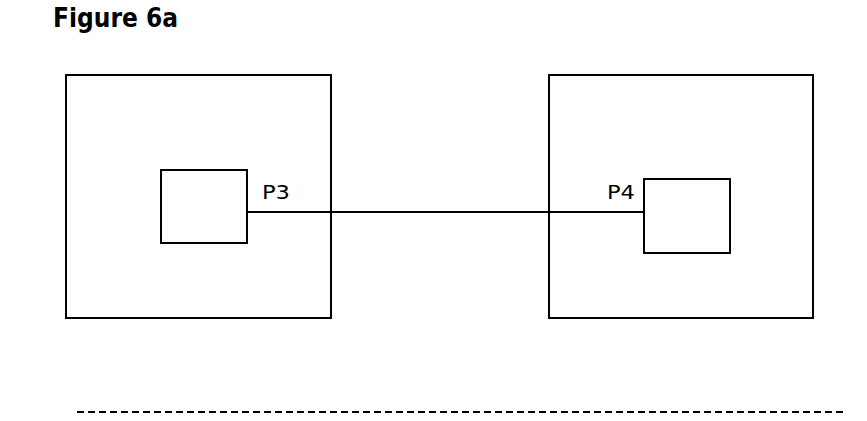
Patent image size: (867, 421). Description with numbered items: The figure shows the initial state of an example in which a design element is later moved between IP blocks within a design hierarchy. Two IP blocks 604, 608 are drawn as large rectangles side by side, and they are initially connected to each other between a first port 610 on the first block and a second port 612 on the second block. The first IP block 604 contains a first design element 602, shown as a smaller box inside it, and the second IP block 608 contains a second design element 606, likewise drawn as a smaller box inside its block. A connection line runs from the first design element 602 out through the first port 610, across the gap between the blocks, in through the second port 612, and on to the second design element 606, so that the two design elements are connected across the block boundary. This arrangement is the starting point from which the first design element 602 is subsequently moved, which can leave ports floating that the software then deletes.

The element IP_1 602 is at (172, 254).
The IP block 604 is at (225, 327).
The element IP_2 606 is at (635, 243).
The IP block 608 is at (688, 328).
The port P1 610 is at (350, 170).
The port P2 612 is at (508, 170).